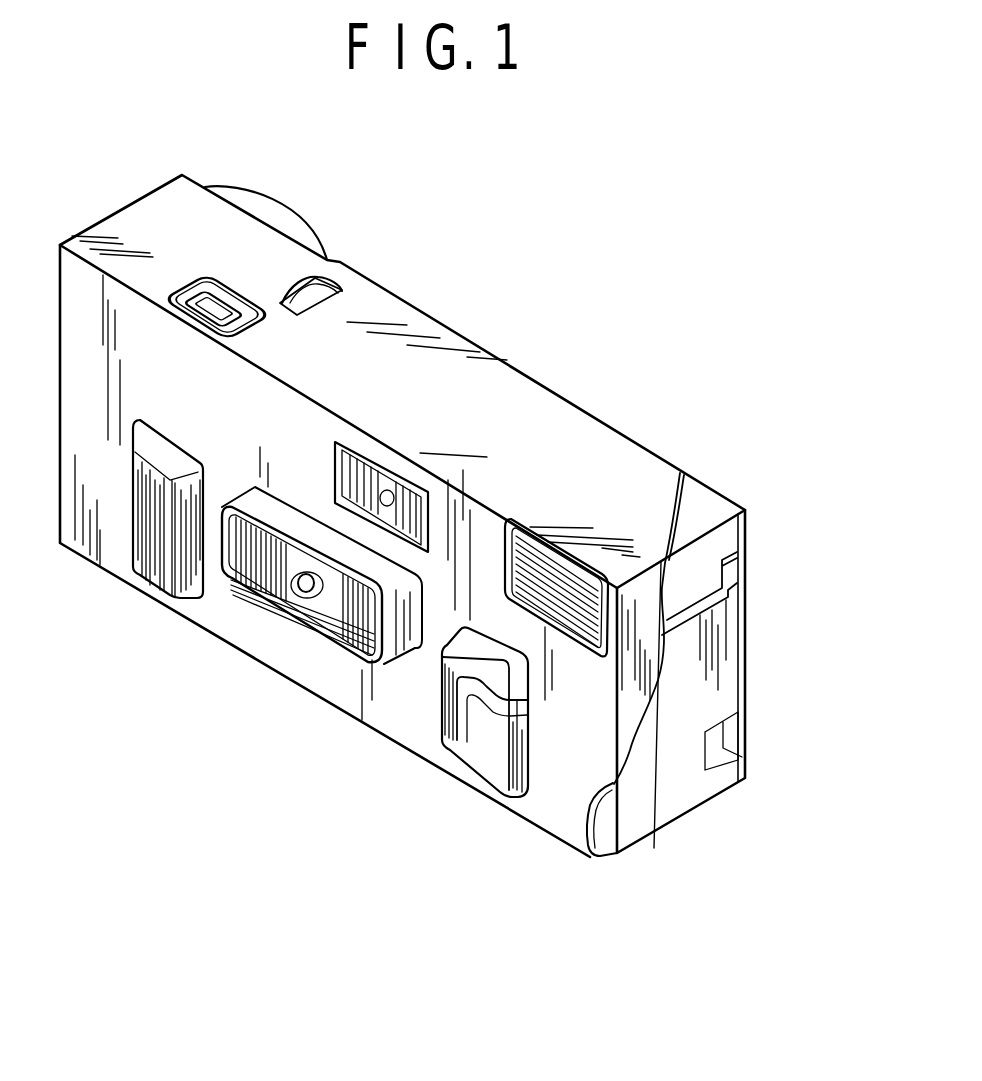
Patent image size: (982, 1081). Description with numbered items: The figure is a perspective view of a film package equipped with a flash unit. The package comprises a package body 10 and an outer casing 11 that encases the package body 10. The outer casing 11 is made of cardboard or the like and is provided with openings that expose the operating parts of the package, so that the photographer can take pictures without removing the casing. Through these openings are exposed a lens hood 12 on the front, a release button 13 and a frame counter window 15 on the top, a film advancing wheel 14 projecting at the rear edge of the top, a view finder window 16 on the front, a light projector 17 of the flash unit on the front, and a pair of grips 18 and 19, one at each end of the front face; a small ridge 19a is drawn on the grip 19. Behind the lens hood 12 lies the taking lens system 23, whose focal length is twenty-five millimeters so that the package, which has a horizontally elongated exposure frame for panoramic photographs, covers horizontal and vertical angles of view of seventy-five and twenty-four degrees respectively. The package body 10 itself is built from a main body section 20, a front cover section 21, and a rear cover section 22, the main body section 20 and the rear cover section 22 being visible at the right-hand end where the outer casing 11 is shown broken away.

The package body 10 is at (818, 822).
The outer casing 11 is at (605, 433).
The lens hood 12 is at (266, 606).
The release button 13 is at (200, 285).
The film advancing wheel 14 is at (287, 212).
The frame counter window 15 is at (328, 283).
The view finder window 16 is at (327, 443).
The light projector 17 is at (503, 548).
The grip 18 is at (148, 560).
The grip 19 is at (442, 683).
The projection on switch 19a is at (480, 748).
The main body section 20 is at (685, 798).
The front cover section 21 is at (607, 823).
The rear cover section 22 is at (745, 700).
The taking lens system 23 is at (320, 610).